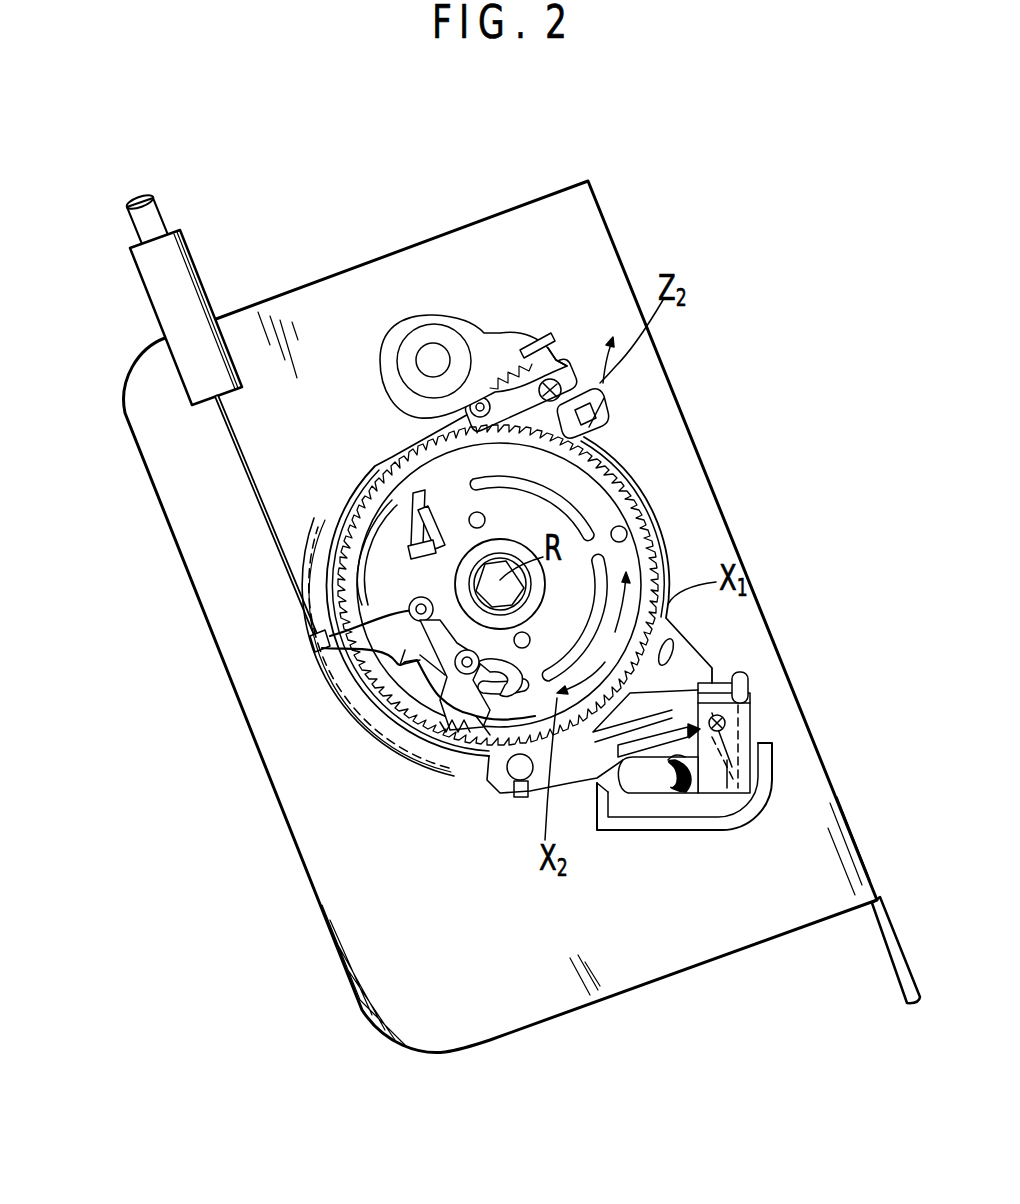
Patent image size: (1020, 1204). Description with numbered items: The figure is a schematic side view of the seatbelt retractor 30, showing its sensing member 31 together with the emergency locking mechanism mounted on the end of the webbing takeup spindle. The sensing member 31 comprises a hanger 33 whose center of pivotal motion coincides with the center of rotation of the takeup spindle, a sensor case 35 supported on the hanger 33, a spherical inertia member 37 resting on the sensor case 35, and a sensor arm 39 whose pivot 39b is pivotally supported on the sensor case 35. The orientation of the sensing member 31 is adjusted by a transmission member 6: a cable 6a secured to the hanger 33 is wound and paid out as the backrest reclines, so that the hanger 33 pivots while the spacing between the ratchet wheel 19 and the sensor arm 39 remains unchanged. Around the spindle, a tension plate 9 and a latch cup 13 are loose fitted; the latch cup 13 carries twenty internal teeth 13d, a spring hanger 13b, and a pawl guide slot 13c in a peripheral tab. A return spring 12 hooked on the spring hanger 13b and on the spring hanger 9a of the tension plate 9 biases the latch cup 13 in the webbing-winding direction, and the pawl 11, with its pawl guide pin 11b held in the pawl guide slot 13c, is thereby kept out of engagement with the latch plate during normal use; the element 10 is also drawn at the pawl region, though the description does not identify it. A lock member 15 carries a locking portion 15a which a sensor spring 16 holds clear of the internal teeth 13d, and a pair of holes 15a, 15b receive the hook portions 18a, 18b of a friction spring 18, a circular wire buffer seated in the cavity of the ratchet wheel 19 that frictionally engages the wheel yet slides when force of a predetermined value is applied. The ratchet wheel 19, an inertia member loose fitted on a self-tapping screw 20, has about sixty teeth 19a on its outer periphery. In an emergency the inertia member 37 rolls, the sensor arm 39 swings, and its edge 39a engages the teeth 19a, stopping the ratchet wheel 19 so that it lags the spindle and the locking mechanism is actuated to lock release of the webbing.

The transmission member 6 is at (250, 525).
The cable 6a is at (237, 448).
The tension plate 9 is at (381, 366).
The spring hanger 9a is at (558, 342).
The pivot hole 10 is at (435, 343).
The pawl 11 is at (566, 340).
The pawl guide pin 11b is at (596, 355).
The return spring 12 is at (506, 352).
The latch cup 13 is at (616, 448).
The spring hanger 13b is at (472, 406).
The pawl guide slot 13c is at (598, 424).
The internal teeth 13d is at (467, 687).
The lock member 15 is at (431, 670).
The locking portion 15a is at (440, 527).
The hole 15b is at (409, 607).
The sensor spring 16 is at (456, 502).
The friction spring 18 is at (386, 555).
The hook portion 18a is at (412, 657).
The hook portion 18b is at (466, 675).
The ratchet wheel 19 is at (439, 744).
The teeth 19a is at (489, 700).
The self-tapping screw 20 is at (640, 552).
The seatbelt retractor 30 is at (694, 360).
The sensing member 31 is at (760, 665).
The hanger 33 is at (606, 747).
The sensor case 35 is at (648, 802).
The inertia member 37 is at (693, 742).
The sensor arm 39 is at (688, 752).
The edge 39a is at (597, 792).
The pivot 39b is at (725, 725).